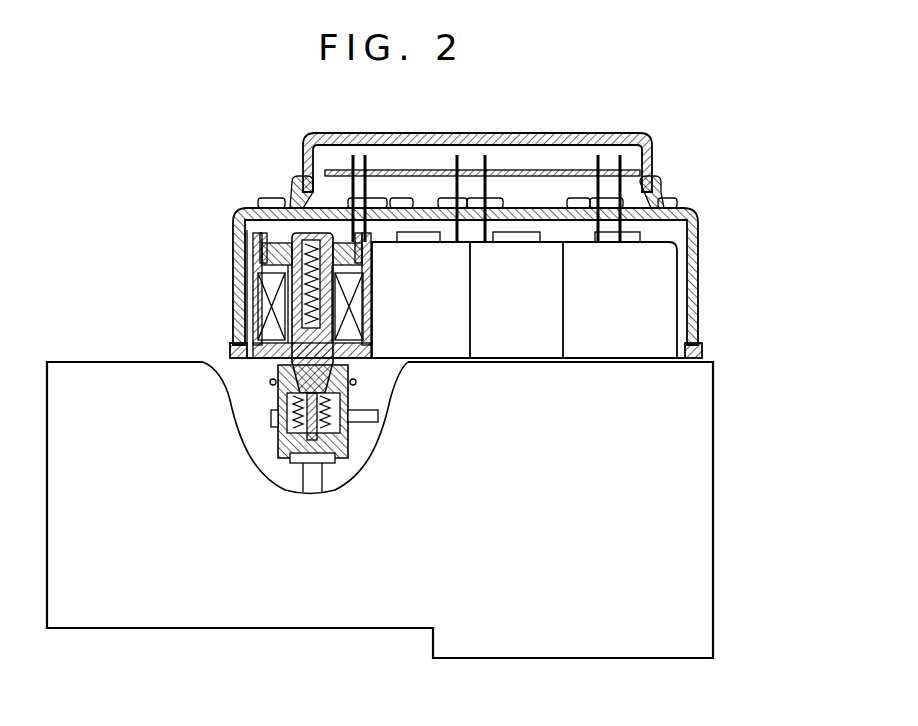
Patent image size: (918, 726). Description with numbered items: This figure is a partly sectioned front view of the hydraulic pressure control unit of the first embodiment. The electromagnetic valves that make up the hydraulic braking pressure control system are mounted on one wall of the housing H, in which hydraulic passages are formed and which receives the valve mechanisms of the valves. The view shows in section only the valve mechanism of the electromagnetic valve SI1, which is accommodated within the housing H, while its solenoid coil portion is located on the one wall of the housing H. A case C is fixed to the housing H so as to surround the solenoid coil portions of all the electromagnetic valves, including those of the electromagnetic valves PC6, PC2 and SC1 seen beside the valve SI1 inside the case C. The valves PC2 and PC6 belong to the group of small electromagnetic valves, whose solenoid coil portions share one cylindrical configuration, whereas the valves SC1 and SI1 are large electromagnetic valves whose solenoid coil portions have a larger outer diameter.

The housing H is at (220, 592).
The case C is at (236, 222).
The electromagnetic valve SI1 is at (262, 272).
The electromagnetic valve PC6 is at (391, 263).
The electromagnetic valve PC2 is at (528, 280).
The electromagnetic valve SC1 is at (653, 287).